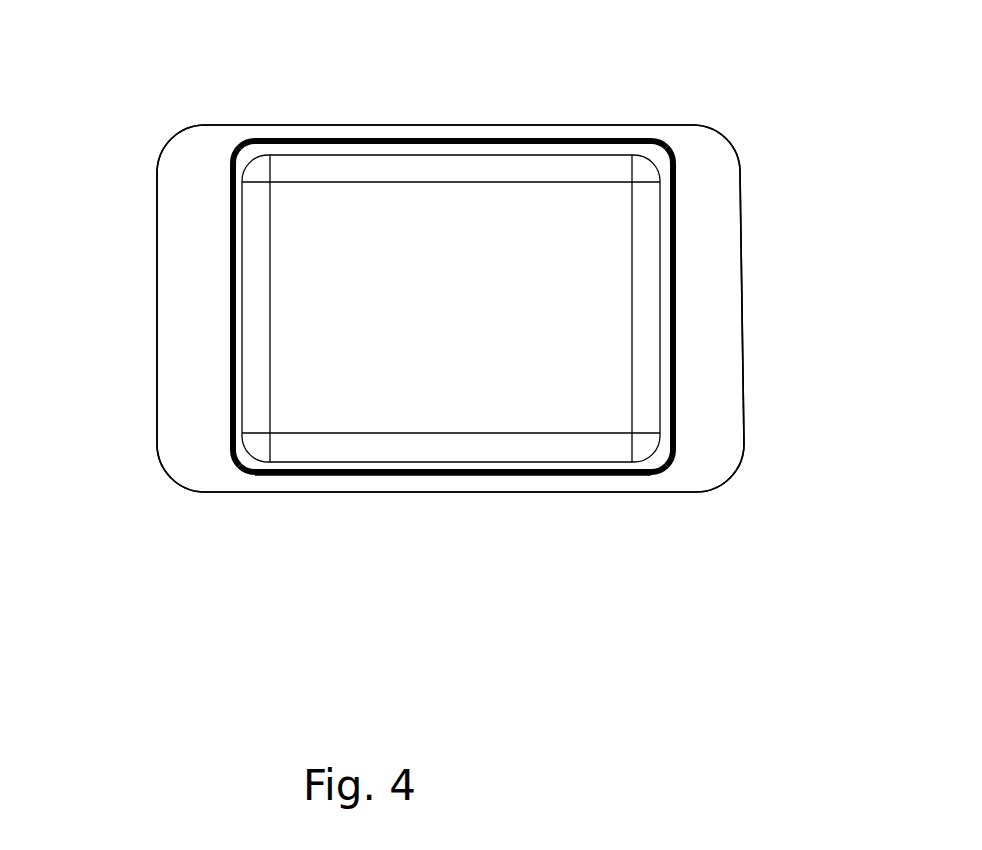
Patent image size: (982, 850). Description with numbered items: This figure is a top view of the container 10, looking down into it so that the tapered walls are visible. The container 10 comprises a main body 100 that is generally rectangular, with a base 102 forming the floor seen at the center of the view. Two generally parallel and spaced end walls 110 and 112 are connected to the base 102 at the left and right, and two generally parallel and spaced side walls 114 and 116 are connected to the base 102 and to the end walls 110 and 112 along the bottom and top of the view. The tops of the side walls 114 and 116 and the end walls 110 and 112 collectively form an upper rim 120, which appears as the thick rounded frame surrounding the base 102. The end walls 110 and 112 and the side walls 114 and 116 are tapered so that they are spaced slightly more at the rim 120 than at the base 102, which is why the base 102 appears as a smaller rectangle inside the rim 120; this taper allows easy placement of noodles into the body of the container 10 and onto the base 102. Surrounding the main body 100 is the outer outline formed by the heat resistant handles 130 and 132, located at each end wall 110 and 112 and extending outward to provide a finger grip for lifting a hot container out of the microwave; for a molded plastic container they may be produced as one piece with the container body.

The container 10 is at (218, 588).
The main body 100 is at (580, 170).
The base 102 is at (442, 263).
The end wall 110 is at (238, 233).
The end wall 112 is at (668, 235).
The side wall 114 is at (521, 465).
The side wall 116 is at (537, 150).
The upper rim 120 is at (330, 470).
The heat resistant handle 130 is at (180, 315).
The heat resistant handle 132 is at (730, 303).